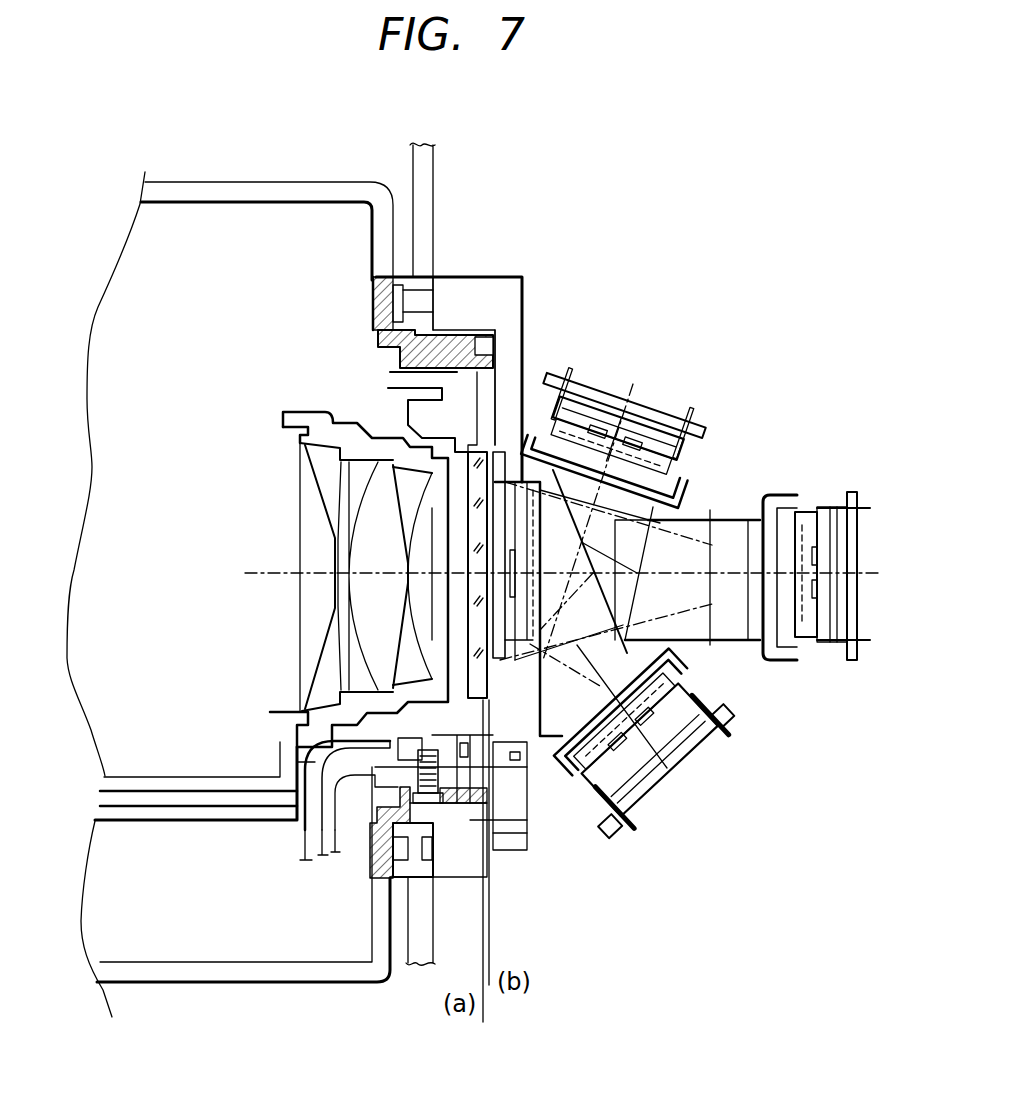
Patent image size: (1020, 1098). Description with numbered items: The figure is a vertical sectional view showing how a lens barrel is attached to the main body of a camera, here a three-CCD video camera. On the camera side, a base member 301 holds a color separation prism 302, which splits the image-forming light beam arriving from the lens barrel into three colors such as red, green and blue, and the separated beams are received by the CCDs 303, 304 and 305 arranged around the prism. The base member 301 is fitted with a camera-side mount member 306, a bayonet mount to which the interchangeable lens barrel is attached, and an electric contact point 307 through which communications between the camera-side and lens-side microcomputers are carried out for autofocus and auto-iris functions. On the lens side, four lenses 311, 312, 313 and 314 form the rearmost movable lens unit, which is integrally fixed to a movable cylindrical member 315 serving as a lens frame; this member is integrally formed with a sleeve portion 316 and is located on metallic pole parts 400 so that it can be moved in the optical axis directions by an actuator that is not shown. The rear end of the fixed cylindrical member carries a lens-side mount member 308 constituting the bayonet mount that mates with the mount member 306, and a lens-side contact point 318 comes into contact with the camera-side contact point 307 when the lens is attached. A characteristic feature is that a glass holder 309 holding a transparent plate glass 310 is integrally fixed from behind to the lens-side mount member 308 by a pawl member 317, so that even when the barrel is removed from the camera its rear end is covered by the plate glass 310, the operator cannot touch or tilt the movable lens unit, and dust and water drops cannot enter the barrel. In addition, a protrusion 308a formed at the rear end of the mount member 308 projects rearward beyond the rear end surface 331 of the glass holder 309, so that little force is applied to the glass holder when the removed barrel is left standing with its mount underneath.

The base member 301 is at (510, 286).
The color separation prism 302 is at (693, 520).
The CCD 303 is at (622, 440).
The CCD 304 is at (815, 595).
The CCD 305 is at (672, 737).
The mount member 306 is at (420, 282).
The electric contact point 307 is at (505, 772).
The lens-side mount member 308 is at (372, 297).
The protrusion 308a is at (498, 332).
The glass holder 309 is at (482, 412).
The plate glass 310 is at (476, 535).
The lens 311 is at (313, 602).
The lens 312 is at (348, 503).
The lens 313 is at (378, 488).
The lens 314 is at (420, 626).
The movable cylindrical member 315 is at (325, 720).
The sleeve portion 316 is at (203, 812).
The pawl member 317 is at (395, 378).
The lens-side contact point 318 is at (418, 773).
The rear end surface 331 is at (562, 368).
The metallic pole parts 400 is at (127, 803).